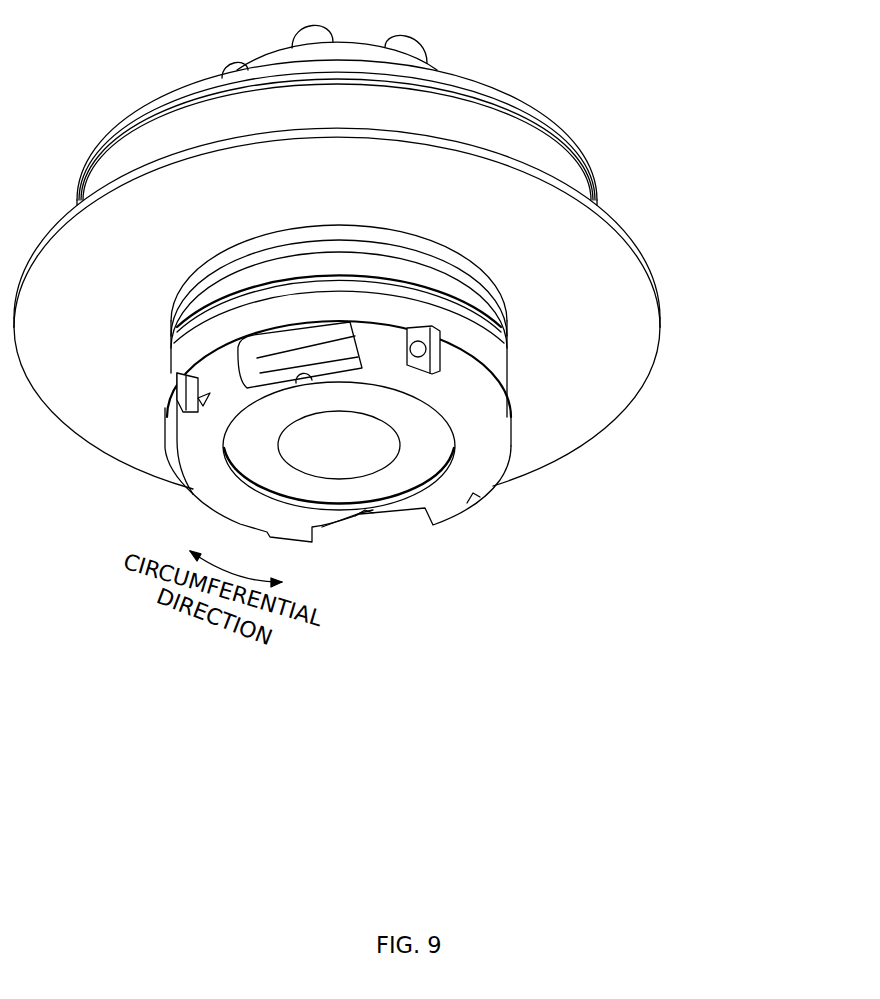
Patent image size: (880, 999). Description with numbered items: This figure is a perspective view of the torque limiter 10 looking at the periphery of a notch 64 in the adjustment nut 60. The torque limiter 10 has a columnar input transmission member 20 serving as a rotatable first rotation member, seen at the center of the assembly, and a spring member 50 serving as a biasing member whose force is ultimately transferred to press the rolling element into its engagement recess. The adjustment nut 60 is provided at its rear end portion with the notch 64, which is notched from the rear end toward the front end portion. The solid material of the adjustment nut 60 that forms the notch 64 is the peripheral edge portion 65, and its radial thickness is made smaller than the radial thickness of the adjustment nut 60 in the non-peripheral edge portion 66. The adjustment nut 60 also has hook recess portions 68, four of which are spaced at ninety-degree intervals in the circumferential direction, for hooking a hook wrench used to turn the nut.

The torque limiter 10 is at (668, 254).
The input transmission member 20 is at (385, 488).
The spring member 50 is at (465, 316).
The adjustment nut 60 is at (203, 476).
The notch 64 is at (321, 360).
The peripheral edge portion 65 is at (280, 378).
The non-peripheral edge portion 66 is at (303, 358).
The hook recess portions 68 is at (430, 330).